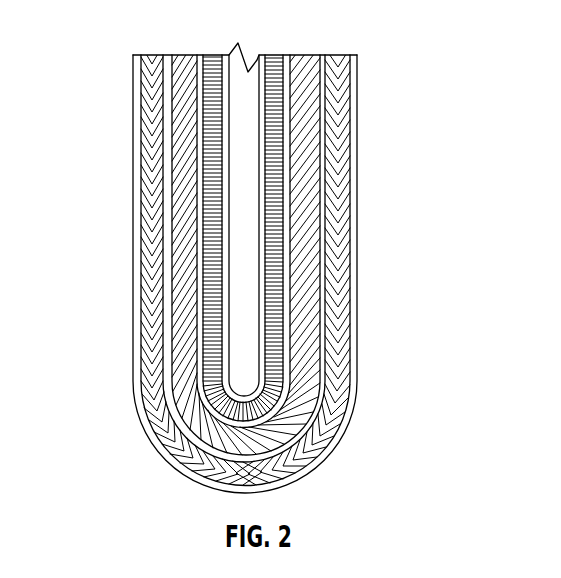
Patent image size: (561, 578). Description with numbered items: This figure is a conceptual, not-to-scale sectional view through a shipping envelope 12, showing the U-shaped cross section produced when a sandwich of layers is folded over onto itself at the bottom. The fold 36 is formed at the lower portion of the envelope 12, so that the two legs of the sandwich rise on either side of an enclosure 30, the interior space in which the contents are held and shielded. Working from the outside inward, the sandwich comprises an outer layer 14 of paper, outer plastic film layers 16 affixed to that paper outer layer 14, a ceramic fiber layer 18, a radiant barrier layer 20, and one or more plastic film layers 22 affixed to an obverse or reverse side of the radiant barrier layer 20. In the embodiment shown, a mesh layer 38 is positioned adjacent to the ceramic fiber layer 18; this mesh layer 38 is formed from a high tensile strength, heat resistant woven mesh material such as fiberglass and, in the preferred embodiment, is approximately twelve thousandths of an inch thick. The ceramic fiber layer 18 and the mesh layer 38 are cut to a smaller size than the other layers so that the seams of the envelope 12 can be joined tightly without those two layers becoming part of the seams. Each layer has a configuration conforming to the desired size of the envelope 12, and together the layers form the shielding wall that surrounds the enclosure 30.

The envelope 12 is at (391, 57).
The outer layer 14 is at (349, 108).
The outer plastic film layers 16 is at (327, 200).
The ceramic fiber layer 18 is at (299, 375).
The radiant barrier layer 20 is at (217, 377).
The plastic film layers 22 is at (210, 115).
The enclosure 30 is at (238, 225).
The fold 36 is at (200, 490).
The mesh layer 38 is at (170, 310).